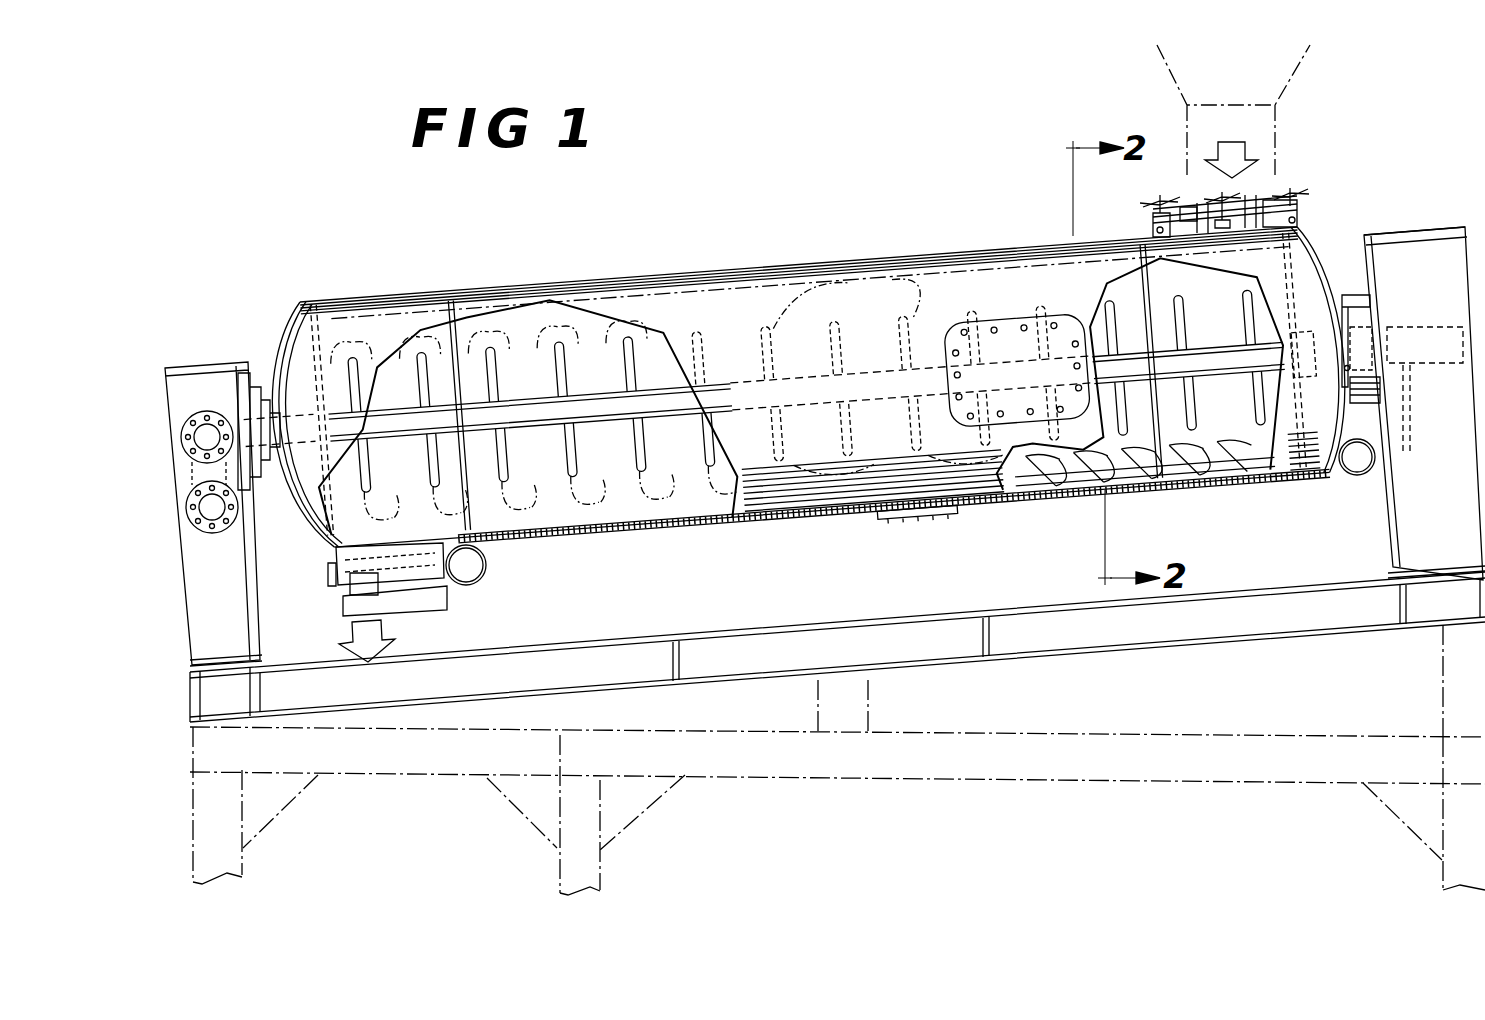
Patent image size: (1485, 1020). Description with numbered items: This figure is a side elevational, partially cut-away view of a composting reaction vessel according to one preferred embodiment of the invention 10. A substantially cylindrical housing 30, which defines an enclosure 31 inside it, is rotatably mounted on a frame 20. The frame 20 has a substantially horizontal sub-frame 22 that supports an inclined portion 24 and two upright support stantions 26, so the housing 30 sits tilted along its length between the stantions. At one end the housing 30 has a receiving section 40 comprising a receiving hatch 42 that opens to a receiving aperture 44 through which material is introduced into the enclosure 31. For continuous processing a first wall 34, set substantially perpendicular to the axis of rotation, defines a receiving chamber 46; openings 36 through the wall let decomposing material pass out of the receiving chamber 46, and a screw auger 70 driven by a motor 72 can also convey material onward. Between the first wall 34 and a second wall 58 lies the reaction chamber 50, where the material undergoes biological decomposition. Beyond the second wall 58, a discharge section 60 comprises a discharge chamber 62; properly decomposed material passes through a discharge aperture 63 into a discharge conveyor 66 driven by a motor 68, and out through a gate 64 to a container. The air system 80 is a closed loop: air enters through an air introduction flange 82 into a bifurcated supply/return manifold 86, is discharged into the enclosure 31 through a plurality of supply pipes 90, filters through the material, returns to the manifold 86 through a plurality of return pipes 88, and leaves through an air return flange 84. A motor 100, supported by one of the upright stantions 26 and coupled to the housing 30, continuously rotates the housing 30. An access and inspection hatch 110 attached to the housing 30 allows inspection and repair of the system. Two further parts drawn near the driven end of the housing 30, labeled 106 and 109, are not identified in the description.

The invention 10 is at (790, 170).
The frame 20 is at (1417, 223).
The sub-frame 22 is at (1003, 773).
The inclined portion 24 is at (907, 633).
The upright support stantions 26 is at (220, 377).
The housing 30 is at (770, 272).
The enclosure 31 is at (505, 385).
The first wall 34 is at (1140, 296).
The openings 36 is at (500, 532).
The receiving section 40 is at (1180, 274).
The receiving hatch 42 is at (1258, 192).
The receiving aperture 44 is at (1303, 240).
The receiving chamber 46 is at (1233, 445).
The reaction chamber 50 is at (857, 520).
The second wall 58 is at (460, 327).
The discharge section 60 is at (350, 298).
The discharge chamber 62 is at (375, 305).
The discharge aperture 63 is at (323, 557).
The gate 64 is at (390, 600).
The discharge conveyor 66 is at (420, 593).
The motor 68 is at (478, 578).
The screw auger 70 is at (1200, 462).
The motor 72 is at (1373, 473).
The air system 80 is at (205, 403).
The air introduction flange 82 is at (203, 437).
The air return flange 84 is at (210, 510).
The bifurcated supply/return manifold 86 is at (612, 405).
The return pipes 88 is at (563, 353).
The supply pipes 90 is at (630, 430).
The motor 100 is at (1430, 350).
The bearing housing 106 is at (1343, 297).
The seal 109 is at (1350, 320).
The access and inspection hatch 110 is at (1030, 317).